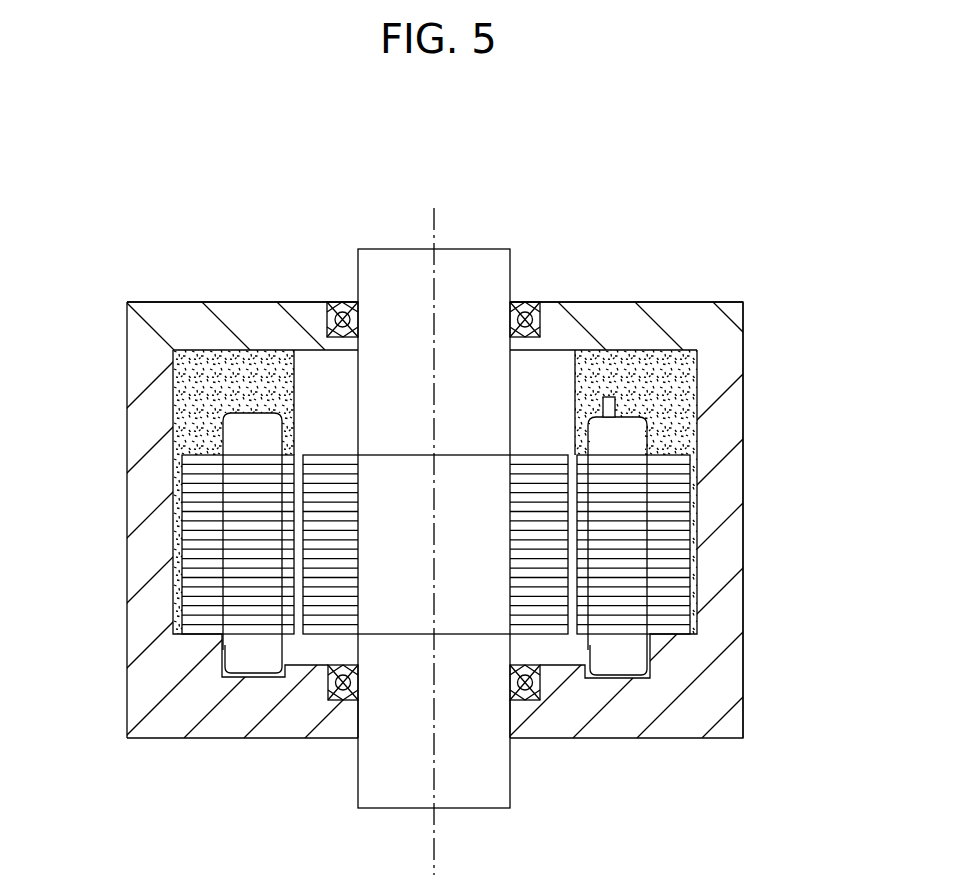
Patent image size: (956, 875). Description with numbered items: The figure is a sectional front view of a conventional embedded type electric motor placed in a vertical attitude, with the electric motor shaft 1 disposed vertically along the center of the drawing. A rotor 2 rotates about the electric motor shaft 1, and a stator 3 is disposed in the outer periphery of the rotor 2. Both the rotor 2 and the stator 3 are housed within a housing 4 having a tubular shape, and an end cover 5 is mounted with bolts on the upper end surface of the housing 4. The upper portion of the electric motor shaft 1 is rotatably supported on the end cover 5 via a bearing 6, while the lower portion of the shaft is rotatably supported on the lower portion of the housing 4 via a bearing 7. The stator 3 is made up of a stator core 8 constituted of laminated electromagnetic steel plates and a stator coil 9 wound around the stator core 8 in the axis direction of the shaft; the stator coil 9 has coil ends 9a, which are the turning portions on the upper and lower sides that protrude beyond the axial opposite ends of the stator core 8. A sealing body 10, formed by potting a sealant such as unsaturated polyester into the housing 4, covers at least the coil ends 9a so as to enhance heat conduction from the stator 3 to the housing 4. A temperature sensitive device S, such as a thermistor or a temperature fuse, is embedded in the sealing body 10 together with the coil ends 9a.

The electric motor shaft 1 is at (378, 249).
The rotor 2 is at (535, 455).
The stator 3 is at (359, 535).
The housing 4 is at (745, 588).
The end cover 5 is at (305, 302).
The bearing 6 is at (533, 302).
The bearing 7 is at (343, 700).
The stator core 8 is at (177, 478).
The stator coil 9 is at (357, 535).
The coil end 9a is at (250, 413).
The sealing body 10 is at (197, 396).
The temperature sensitive device S is at (612, 397).